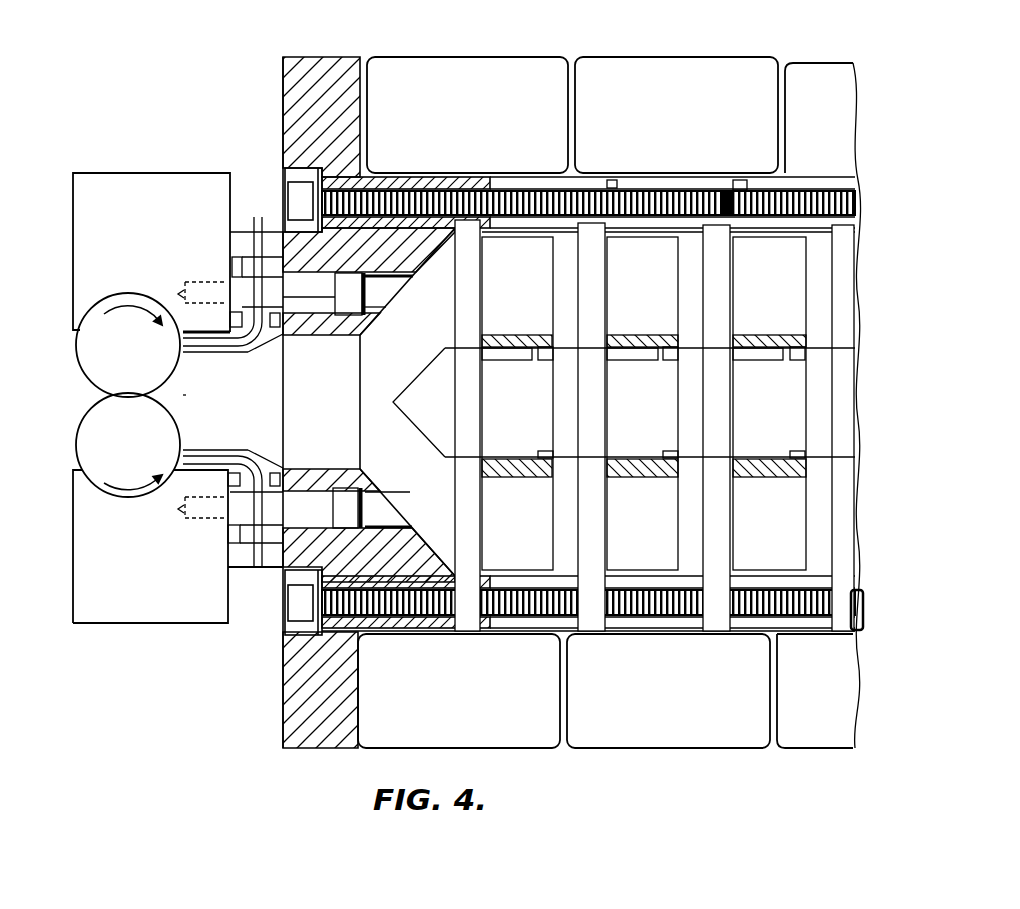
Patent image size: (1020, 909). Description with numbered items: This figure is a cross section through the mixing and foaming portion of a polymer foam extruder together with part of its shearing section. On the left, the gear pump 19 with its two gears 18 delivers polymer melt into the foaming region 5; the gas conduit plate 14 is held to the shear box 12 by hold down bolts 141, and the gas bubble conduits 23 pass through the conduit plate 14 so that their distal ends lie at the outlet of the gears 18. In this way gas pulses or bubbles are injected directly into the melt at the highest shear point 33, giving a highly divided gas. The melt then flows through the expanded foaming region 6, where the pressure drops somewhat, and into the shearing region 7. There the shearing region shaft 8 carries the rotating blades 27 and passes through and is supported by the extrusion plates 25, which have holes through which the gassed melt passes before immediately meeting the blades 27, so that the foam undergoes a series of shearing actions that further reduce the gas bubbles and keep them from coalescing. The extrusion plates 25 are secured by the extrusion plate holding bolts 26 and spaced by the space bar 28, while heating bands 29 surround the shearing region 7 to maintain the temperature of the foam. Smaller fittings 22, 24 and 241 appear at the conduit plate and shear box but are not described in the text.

The foaming region 5 is at (227, 404).
The expanded foaming region 6 is at (419, 350).
The shearing region 7 is at (595, 49).
The shearing region shaft 8 is at (666, 413).
The shear box 12 is at (317, 723).
The gas conduit plate 14 is at (237, 557).
The gears 18 is at (105, 440).
The gear pump 19 is at (130, 600).
The upper feed tube 22 is at (230, 320).
The gas bubble conduits 23 is at (259, 223).
The fastening bolt 24 is at (323, 294).
The extrusion plates 25 is at (718, 262).
The extrusion plate holding bolts 26 is at (478, 615).
The rotating blades 27 is at (515, 267).
The space bar 28 is at (642, 225).
The heating bands 29 is at (807, 100).
The highest shear point 33 is at (186, 357).
The hold down bolts 141 is at (228, 532).
The bolt head 241 is at (383, 294).